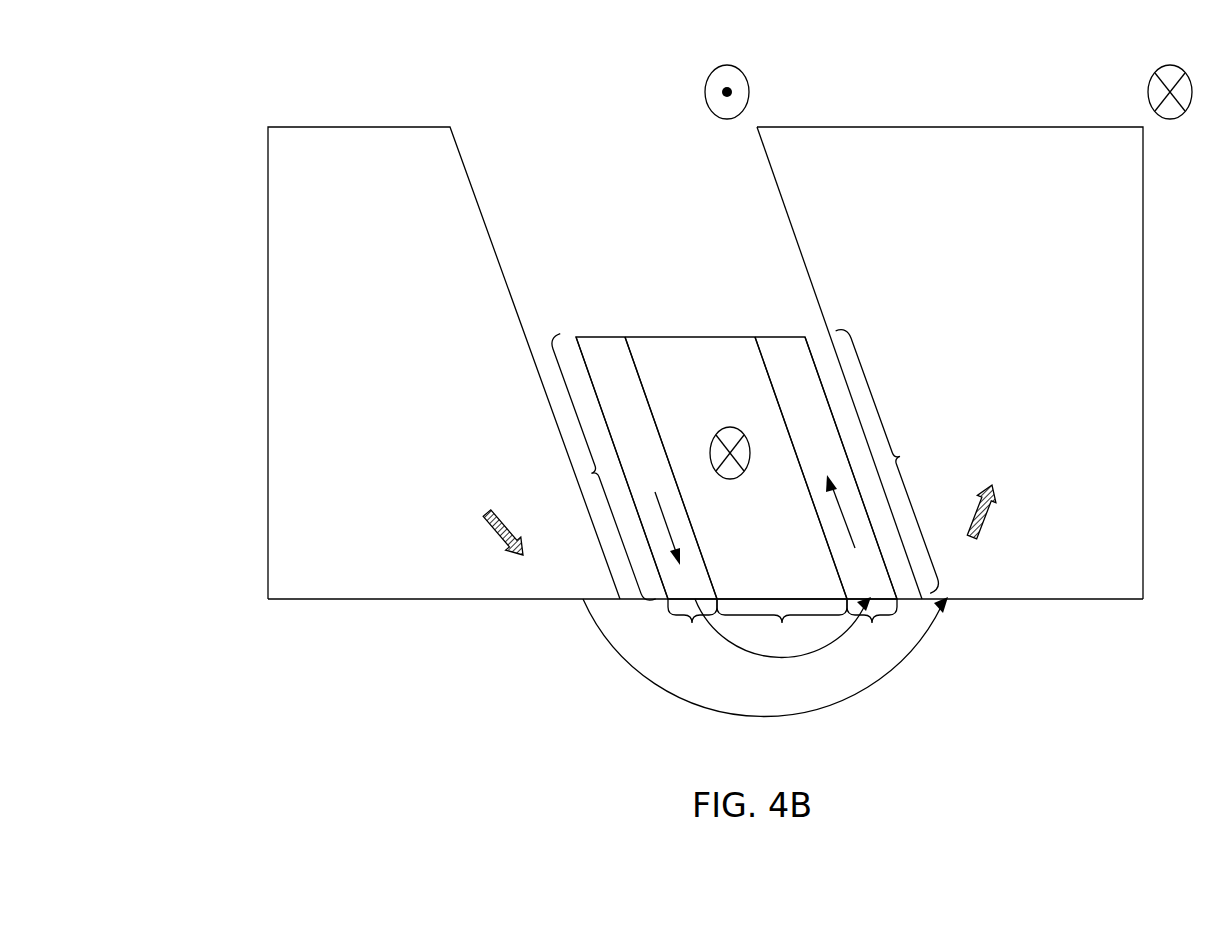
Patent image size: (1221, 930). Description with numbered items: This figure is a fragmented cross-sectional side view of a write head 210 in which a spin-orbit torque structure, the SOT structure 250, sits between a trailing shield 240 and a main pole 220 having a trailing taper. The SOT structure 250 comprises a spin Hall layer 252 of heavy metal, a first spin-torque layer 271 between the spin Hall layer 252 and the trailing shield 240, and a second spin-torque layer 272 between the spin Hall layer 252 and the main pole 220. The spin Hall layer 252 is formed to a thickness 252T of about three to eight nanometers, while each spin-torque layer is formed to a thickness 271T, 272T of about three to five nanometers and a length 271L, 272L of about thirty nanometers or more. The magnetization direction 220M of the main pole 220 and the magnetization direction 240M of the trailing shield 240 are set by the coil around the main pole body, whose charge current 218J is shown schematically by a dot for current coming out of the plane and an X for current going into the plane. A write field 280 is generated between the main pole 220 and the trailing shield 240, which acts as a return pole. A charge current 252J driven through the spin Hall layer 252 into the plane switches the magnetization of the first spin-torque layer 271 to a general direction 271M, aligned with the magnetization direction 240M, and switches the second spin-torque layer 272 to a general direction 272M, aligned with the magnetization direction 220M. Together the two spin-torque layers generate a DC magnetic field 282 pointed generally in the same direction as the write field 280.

The write head 210 is at (266, 70).
The charge current 218J is at (748, 78).
The main pole 220 is at (1007, 347).
The magnetization direction of the main pole 220M is at (983, 523).
The trailing shield 240 is at (404, 353).
The magnetization direction of the trailing shield 240M is at (493, 535).
The SOT structure 250 is at (788, 327).
The spin Hall layer 252 is at (718, 366).
The charge current 252J is at (708, 447).
The thickness of the spin Hall layer 252T is at (782, 627).
The first spin-torque layer 271 is at (607, 378).
The length of the first STL 271L is at (592, 473).
The magnetization direction of the first STL 271M is at (663, 515).
The thickness of the first STL 271T is at (692, 623).
The second spin-torque layer 272 is at (793, 355).
The length of the second STL 272L is at (900, 456).
The magnetization direction of the second STL 272M is at (847, 530).
The thickness of the second STL 272T is at (872, 623).
The write field 280 is at (863, 692).
The DC magnetic field 282 is at (761, 660).